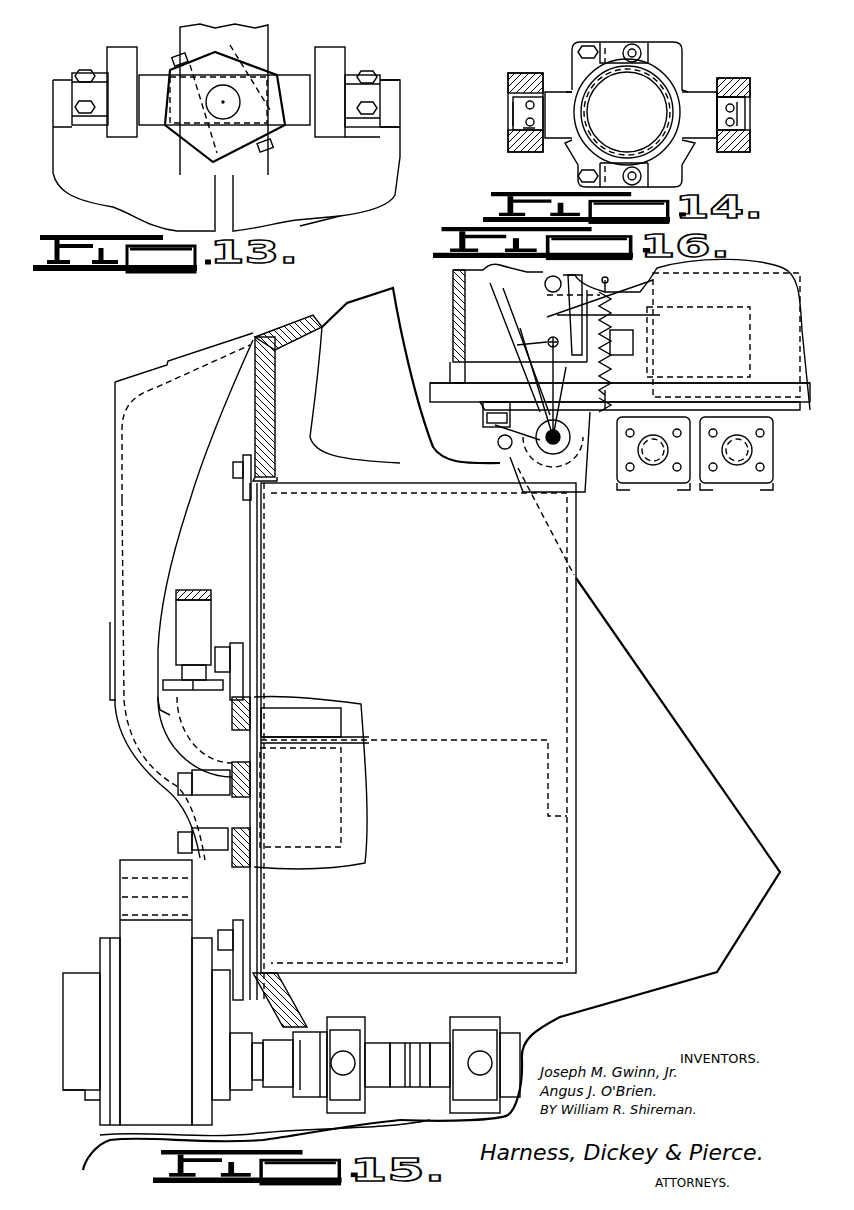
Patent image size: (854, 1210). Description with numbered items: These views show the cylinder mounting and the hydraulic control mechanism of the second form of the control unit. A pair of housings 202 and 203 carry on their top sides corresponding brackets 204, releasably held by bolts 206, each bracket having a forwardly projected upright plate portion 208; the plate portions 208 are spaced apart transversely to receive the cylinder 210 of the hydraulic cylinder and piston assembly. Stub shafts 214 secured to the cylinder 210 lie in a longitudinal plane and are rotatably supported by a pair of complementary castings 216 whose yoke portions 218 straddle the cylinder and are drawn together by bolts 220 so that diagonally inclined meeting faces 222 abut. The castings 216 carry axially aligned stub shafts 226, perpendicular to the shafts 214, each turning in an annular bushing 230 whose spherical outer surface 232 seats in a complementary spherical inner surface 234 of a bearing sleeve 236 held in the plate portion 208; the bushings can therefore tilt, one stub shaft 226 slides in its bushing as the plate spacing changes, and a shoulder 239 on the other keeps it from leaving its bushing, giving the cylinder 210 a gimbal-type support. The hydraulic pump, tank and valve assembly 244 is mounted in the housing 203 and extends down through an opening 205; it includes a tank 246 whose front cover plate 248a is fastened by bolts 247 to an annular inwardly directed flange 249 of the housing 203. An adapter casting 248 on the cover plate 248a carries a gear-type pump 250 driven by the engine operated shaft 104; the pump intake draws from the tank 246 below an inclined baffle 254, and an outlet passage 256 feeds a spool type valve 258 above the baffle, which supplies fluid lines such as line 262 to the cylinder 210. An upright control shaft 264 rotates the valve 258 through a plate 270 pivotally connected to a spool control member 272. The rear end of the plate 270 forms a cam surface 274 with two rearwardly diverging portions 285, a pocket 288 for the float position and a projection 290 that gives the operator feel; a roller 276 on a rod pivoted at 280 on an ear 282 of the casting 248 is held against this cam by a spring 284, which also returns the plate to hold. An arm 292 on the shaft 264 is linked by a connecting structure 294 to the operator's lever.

In FIG. 13, the housing 202 is at (122, 207).
In FIG. 13, the housing 203 is at (323, 210).
In FIG. 15, the housing 203 is at (130, 505).
In FIG. 13, the bracket 204 is at (98, 68).
In FIG. 15, the opening 205 is at (150, 785).
In FIG. 13, the bolt 206 is at (87, 110).
In FIG. 13, the upright plate portion 208 is at (337, 137).
In FIG. 14, the upright plate portion 208 is at (517, 73).
In FIG. 13, the cylinder 210 is at (258, 40).
In FIG. 14, the cylinder 210 is at (636, 48).
In FIG. 13, the stub shaft 214 is at (245, 150).
In FIG. 14, the stub shaft 214 is at (603, 40).
In FIG. 13, the casting 216 is at (150, 77).
In FIG. 14, the yoke portion 218 is at (672, 50).
In FIG. 13, the bolt 220 is at (228, 45).
In FIG. 13, the meeting face 222 is at (210, 88).
In FIG. 14, the stub shaft 226 is at (532, 93).
In FIG. 14, the annular bushing 230 is at (743, 65).
In FIG. 14, the spherical outer surface 232 is at (530, 92).
In FIG. 14, the spherical inner surface 234 is at (533, 143).
In FIG. 14, the bearing sleeve 236 is at (530, 120).
In FIG. 14, the shoulder 239 is at (743, 107).
In FIG. 15, the hydraulic pump, tank and valve assembly 244 is at (152, 795).
In FIG. 15, the tank 246 is at (578, 822).
In FIG. 15, the bolt 247 is at (233, 470).
In FIG. 15, the adapter casting 248 is at (192, 835).
In FIG. 16, the adapter casting 248 is at (693, 395).
In FIG. 15, the front cover plate 248a is at (250, 628).
In FIG. 15, the annular inwardly directed flange 249 is at (253, 452).
In FIG. 15, the pump 250 is at (130, 1100).
In FIG. 15, the inclined baffle 254 is at (440, 740).
In FIG. 15, the outlet passage 256 is at (254, 816).
In FIG. 15, the spool type valve 258 is at (343, 824).
In FIG. 16, the spool type valve 258 is at (733, 350).
In FIG. 15, the flexible fluid line 262 is at (200, 592).
In FIG. 16, the control shaft 264 is at (560, 443).
In FIG. 16, the plate 270 is at (530, 360).
In FIG. 16, the spool control member 272 is at (633, 342).
In FIG. 16, the cam surface 274 is at (458, 271).
In FIG. 16, the cam follower roller 276 is at (745, 260).
In FIG. 16, the pivot 280 is at (797, 270).
In FIG. 16, the ear 282 is at (553, 337).
In FIG. 16, the spring 284 is at (613, 357).
In FIG. 16, the rearwardly diverging portion 285 is at (620, 276).
In FIG. 16, the pocket 288 is at (581, 316).
In FIG. 16, the projection 290 is at (500, 267).
In FIG. 16, the arm 292 is at (550, 453).
In FIG. 16, the connecting structure 294 is at (493, 435).
In FIG. 15, the engine operated shaft 104 is at (520, 1052).